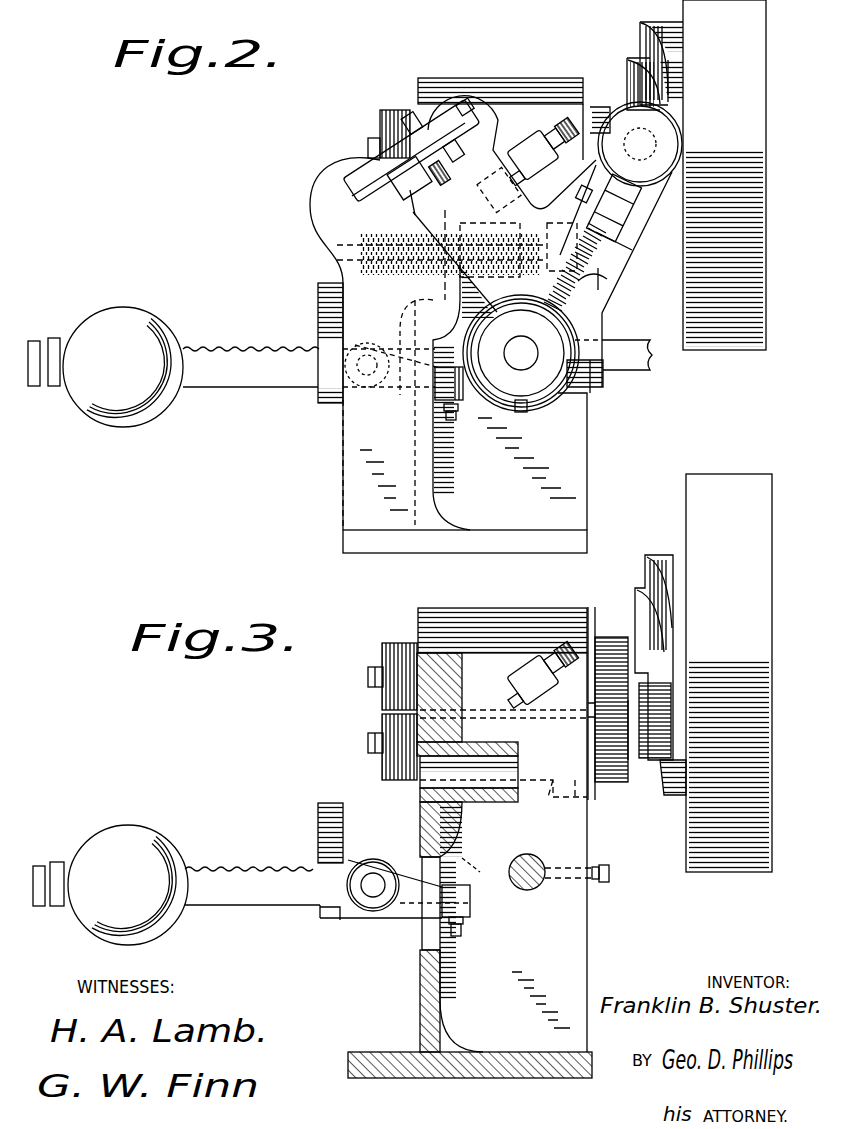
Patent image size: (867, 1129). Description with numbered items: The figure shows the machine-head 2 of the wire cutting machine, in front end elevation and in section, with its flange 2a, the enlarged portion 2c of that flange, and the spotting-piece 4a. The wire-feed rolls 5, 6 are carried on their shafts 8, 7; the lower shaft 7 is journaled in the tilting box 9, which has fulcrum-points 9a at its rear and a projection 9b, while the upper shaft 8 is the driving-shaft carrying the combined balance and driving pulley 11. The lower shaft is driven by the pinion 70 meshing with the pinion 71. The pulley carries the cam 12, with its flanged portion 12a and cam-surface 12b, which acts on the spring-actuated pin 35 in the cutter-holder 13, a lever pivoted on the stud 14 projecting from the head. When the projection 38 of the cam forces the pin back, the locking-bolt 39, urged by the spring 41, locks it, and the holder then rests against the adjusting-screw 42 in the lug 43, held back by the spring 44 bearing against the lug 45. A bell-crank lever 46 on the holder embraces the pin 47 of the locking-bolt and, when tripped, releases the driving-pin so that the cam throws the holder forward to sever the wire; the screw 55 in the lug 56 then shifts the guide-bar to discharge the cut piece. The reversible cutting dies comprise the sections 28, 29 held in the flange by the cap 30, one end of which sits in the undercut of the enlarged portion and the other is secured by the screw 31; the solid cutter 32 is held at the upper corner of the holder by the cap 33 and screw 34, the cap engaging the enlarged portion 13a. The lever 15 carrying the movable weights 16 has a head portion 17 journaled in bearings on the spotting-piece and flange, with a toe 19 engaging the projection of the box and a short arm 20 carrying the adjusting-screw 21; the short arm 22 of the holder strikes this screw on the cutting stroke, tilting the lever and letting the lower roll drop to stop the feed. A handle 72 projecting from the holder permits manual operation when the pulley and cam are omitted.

In FIG. 2, the machine-head 2 is at (441, 300).
In FIG. 3, the machine-head 2 is at (470, 834).
In FIG. 2, the flange 2a is at (379, 415).
In FIG. 2, the enlarged portion 2c is at (310, 205).
In FIG. 2, the spotting-piece 4a is at (318, 305).
In FIG. 3, the spotting-piece 4a is at (318, 806).
In FIG. 2, the wire-feed roll 5 is at (386, 125).
In FIG. 3, the wire-feed roll 5 is at (382, 690).
In FIG. 3, the wire-feed roll 6 is at (382, 762).
In FIG. 3, the shaft 7 is at (368, 742).
In FIG. 2, the shaft 8 is at (368, 146).
In FIG. 3, the shaft 8 is at (368, 674).
In FIG. 3, the tilting box 9 is at (590, 778).
In FIG. 3, the fulcrum-points 9a is at (558, 720).
In FIG. 3, the projection 9b is at (470, 795).
In FIG. 2, the combined balance and driving pulley 11 is at (724, 175).
In FIG. 3, the combined balance and driving pulley 11 is at (729, 673).
In FIG. 2, the cam 12 is at (660, 21).
In FIG. 3, the cam 12 is at (658, 553).
In FIG. 2, the flanged portion 12a is at (632, 63).
In FIG. 3, the flanged portion 12a is at (650, 615).
In FIG. 2, the cam-surface 12b is at (670, 90).
In FIG. 3, the cam-surface 12b is at (672, 598).
In FIG. 2, the cutter-holder 13 is at (588, 273).
In FIG. 2, the enlarged portion 13a is at (467, 79).
In FIG. 2, the stud 14 is at (521, 353).
In FIG. 3, the stud 14 is at (512, 858).
In FIG. 2, the lever 15 is at (240, 347).
In FIG. 3, the lever 15 is at (262, 868).
In FIG. 2, the movable weights 16 is at (105, 367).
In FIG. 3, the movable weights 16 is at (110, 885).
In FIG. 2, the head portion 17 is at (345, 405).
In FIG. 3, the head portion 17 is at (373, 912).
In FIG. 2, the toe 19 is at (430, 300).
In FIG. 3, the toe 19 is at (480, 872).
In FIG. 2, the short arm 20 is at (440, 395).
In FIG. 3, the short arm 20 is at (418, 910).
In FIG. 2, the adjusting-screw 21 is at (458, 412).
In FIG. 3, the adjusting-screw 21 is at (464, 926).
In FIG. 2, the short arm 22 is at (519, 353).
In FIG. 2, the die section 28 is at (395, 192).
In FIG. 2, the die section 29 is at (395, 175).
In FIG. 2, the cap 30 is at (400, 143).
In FIG. 2, the screw 31 is at (413, 117).
In FIG. 2, the solid cutter 32 is at (406, 213).
In FIG. 2, the cap 33 is at (470, 140).
In FIG. 2, the screw 34 is at (467, 102).
In FIG. 2, the pin 35 is at (662, 140).
In FIG. 3, the projection 38 is at (655, 706).
In FIG. 2, the locking-bolt 39 is at (550, 292).
In FIG. 2, the spring 41 is at (607, 283).
In FIG. 2, the adjusting-screw 42 is at (565, 142).
In FIG. 3, the adjusting-screw 42 is at (565, 665).
In FIG. 2, the lug 43 is at (535, 143).
In FIG. 3, the lug 43 is at (535, 667).
In FIG. 2, the spring 44 is at (392, 280).
In FIG. 2, the lug 45 is at (518, 222).
In FIG. 2, the bell-crank lever 46 is at (614, 245).
In FIG. 2, the pin 47 is at (584, 186).
In FIG. 2, the screw 55 is at (450, 150).
In FIG. 2, the lug 56 is at (439, 248).
In FIG. 3, the pinion 70 is at (612, 637).
In FIG. 3, the pinion 71 is at (612, 783).
In FIG. 2, the handle 72 is at (617, 358).